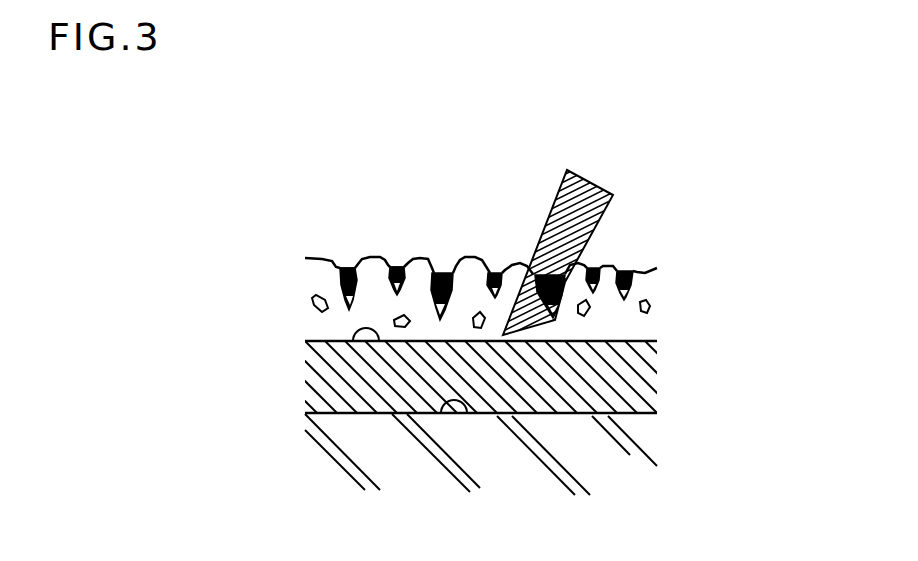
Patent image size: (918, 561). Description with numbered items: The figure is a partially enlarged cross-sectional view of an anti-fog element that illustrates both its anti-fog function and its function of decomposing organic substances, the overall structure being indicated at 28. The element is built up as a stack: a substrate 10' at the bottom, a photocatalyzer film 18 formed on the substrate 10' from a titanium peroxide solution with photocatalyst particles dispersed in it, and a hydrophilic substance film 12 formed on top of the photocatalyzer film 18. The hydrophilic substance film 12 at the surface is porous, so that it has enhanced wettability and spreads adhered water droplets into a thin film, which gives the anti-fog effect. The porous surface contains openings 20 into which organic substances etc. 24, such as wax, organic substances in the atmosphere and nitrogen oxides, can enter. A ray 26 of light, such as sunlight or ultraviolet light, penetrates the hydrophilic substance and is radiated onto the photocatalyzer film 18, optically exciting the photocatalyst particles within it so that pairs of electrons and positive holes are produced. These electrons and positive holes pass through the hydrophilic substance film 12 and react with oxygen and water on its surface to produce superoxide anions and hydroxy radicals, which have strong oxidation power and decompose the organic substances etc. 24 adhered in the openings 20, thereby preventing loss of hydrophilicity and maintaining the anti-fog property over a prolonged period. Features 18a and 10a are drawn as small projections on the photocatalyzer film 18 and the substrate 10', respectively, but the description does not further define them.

The surface measurement assembly 28 is at (698, 232).
The hydrophilic substance film 12 is at (515, 209).
The photocatalyzer film 18 is at (653, 380).
The substrate 10' is at (517, 454).
The projection of intermediate layer 18a is at (377, 340).
The projection of substrate 10a is at (455, 412).
The openings 20 is at (407, 254).
The organic substances etc. 24 is at (397, 266).
The ray of light 26 is at (590, 203).